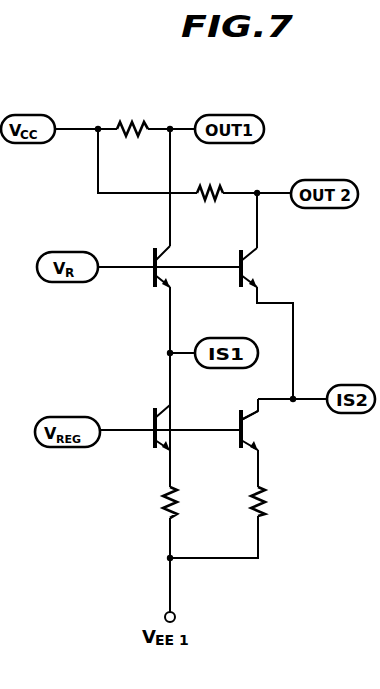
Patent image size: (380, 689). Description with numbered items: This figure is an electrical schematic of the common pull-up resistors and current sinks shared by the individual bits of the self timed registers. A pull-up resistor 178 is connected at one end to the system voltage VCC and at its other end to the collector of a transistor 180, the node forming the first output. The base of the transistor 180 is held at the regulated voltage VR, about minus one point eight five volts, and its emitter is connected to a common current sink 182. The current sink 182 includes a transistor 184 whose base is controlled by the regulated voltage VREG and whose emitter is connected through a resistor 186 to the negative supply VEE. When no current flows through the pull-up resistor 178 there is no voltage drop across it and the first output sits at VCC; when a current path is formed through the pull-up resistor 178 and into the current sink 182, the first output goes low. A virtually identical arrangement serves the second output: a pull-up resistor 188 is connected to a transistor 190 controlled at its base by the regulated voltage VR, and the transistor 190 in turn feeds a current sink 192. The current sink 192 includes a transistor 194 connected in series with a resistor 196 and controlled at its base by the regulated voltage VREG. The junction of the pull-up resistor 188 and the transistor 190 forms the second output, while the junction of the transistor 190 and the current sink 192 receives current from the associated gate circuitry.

The pull-up resistor 178 is at (137, 124).
The pull-up resistor 188 is at (225, 190).
The transistor 180 is at (166, 260).
The transistor 190 is at (255, 260).
The transistor 184 is at (168, 420).
The common current sink 182 is at (209, 423).
The transistor 194 is at (250, 417).
The current sink 192 is at (281, 475).
The resistor 196 is at (268, 498).
The resistor 186 is at (163, 493).